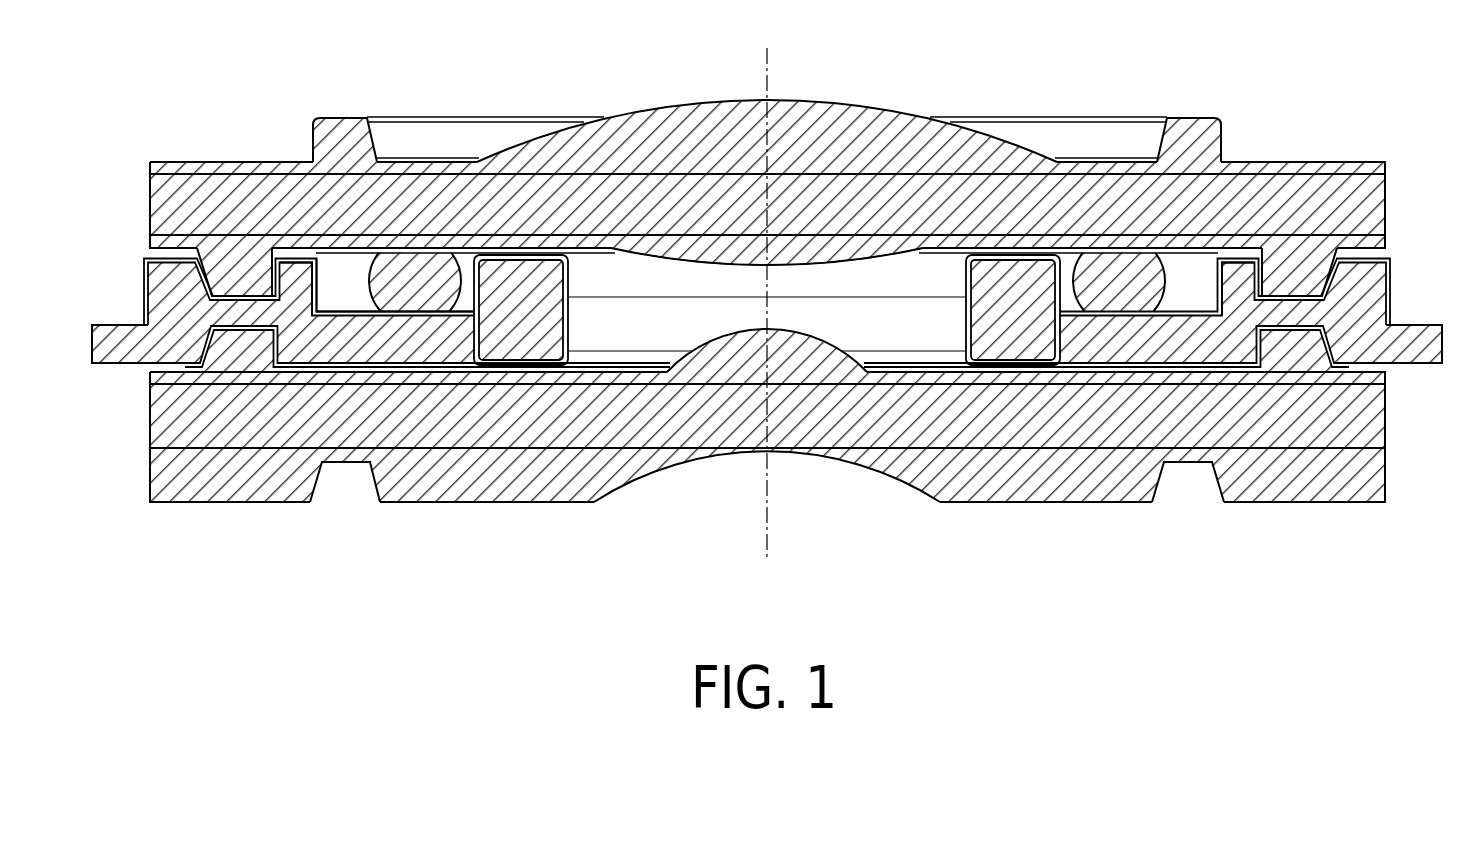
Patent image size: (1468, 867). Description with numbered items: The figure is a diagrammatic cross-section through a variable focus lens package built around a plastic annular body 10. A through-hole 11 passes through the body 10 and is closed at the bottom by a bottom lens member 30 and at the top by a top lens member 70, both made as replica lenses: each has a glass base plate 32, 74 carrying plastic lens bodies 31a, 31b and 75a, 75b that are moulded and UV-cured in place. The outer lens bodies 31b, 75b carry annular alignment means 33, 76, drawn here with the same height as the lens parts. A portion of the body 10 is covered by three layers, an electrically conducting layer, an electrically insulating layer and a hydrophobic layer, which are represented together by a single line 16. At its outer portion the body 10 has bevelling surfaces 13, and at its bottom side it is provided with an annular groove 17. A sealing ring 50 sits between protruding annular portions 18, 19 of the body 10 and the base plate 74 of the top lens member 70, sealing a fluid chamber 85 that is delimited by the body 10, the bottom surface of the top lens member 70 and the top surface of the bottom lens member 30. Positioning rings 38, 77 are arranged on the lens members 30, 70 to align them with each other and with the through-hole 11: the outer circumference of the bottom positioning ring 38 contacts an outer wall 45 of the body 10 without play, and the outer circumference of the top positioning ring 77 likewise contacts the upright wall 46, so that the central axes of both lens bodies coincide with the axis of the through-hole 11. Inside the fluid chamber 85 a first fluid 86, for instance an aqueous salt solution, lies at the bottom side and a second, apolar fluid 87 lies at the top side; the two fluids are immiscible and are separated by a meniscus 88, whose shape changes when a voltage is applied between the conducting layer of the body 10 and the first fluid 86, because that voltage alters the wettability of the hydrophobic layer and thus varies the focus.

The annular body 10 is at (765, 305).
The through-hole 11 is at (795, 282).
The bevelling surfaces 13 is at (112, 323).
The layer line 16 is at (570, 321).
The annular groove 17 is at (343, 298).
The protruding annular portion 18 is at (520, 268).
The protruding annular portion 19 is at (296, 267).
The bottom lens member 30 is at (767, 443).
The lens body 31a is at (795, 363).
The outer lens body 31b is at (968, 473).
The glass base plate 32 is at (553, 427).
The alignment means 33 is at (344, 487).
The bottom positioning ring 38 is at (228, 262).
The outer wall 45 is at (255, 350).
The upright wall 46 is at (272, 276).
The sealing ring 50 is at (405, 268).
The top lens member 70 is at (767, 172).
The glass base plate 74 is at (248, 190).
The lens body 75a is at (745, 257).
The outer lens body 75b is at (671, 132).
The alignment means 76 is at (350, 132).
The top positioning ring 77 is at (253, 366).
The fluid chamber 85 is at (700, 325).
The first fluid 86 is at (890, 325).
The second fluid 87 is at (933, 278).
The meniscus 88 is at (852, 297).